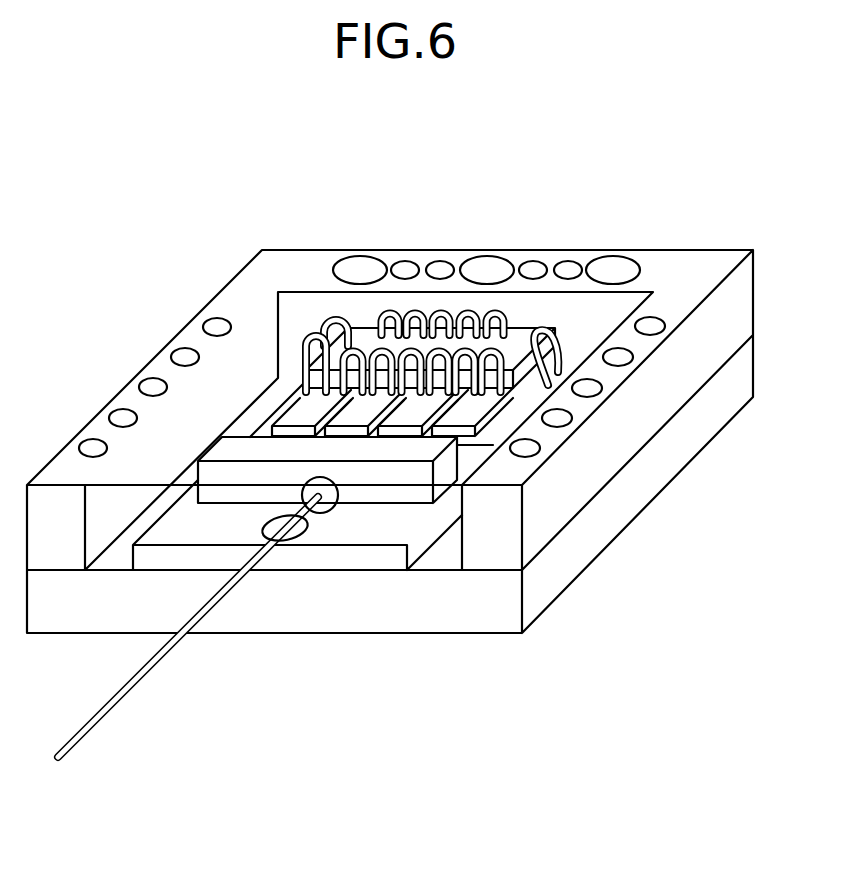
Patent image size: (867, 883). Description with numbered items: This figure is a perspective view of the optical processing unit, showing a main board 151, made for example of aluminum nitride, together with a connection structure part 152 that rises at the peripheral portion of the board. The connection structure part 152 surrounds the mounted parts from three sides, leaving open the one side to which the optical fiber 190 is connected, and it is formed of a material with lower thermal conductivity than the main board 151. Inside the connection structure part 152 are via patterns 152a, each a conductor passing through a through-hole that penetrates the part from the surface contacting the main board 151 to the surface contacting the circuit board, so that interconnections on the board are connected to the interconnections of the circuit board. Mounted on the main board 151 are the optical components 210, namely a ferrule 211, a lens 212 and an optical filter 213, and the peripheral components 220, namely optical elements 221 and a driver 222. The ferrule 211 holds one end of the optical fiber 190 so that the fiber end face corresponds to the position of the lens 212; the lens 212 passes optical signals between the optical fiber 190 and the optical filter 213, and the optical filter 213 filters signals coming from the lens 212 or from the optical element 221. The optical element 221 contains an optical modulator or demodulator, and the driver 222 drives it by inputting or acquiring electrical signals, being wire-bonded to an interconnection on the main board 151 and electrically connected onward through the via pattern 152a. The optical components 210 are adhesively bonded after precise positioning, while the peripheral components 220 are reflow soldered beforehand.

The main board 151 is at (753, 370).
The connection structure part 152 is at (390, 385).
The via pattern 152a is at (612, 255).
The optical fiber 190 is at (113, 700).
The optical components 210 is at (257, 597).
The ferrule 211 is at (279, 600).
The lens 212 is at (323, 497).
The optical filter 213 is at (378, 482).
The peripheral components 220 is at (387, 295).
The optical element 221 is at (302, 417).
The driver 222 is at (368, 337).